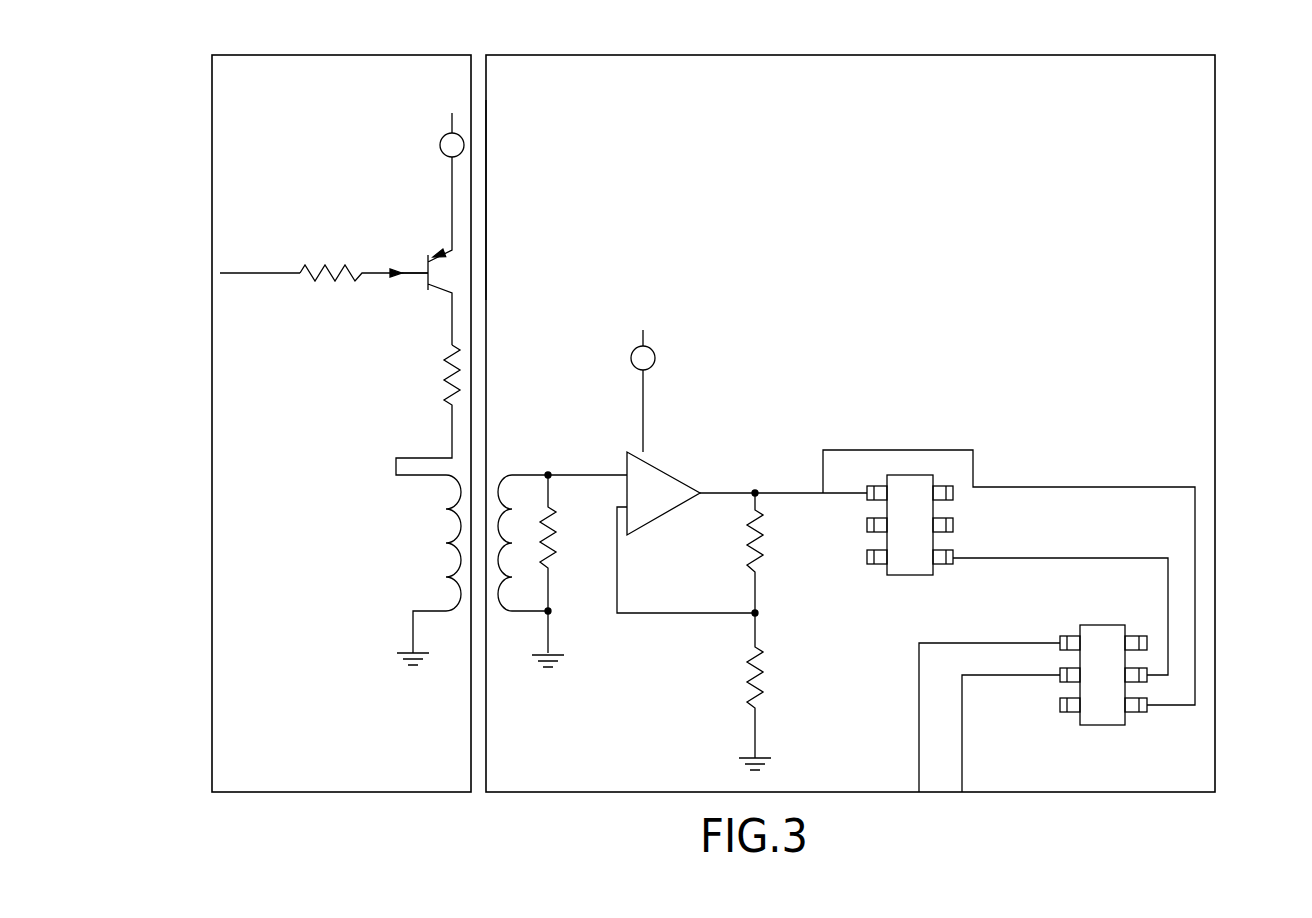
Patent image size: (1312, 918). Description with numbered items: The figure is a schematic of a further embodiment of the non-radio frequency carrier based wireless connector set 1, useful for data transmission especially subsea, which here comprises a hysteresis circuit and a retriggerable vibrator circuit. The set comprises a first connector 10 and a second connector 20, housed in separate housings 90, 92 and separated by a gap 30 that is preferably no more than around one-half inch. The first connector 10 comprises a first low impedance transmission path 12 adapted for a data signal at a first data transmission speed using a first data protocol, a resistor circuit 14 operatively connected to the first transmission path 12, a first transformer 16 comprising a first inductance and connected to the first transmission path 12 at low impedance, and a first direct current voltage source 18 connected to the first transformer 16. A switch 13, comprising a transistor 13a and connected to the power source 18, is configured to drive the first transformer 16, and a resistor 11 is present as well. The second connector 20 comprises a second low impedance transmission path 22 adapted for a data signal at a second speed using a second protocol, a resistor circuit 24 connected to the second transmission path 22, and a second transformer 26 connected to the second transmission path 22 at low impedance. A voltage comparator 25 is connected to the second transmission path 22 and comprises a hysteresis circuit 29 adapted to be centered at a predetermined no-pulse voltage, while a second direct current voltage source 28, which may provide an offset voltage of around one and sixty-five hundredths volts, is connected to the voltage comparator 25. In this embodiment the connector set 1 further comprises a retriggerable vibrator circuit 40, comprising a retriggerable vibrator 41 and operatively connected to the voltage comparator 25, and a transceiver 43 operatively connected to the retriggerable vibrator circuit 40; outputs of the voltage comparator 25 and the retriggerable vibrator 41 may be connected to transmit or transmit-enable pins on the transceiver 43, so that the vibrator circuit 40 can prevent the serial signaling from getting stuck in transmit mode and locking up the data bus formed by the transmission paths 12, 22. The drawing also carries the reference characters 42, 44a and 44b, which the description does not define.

The non-radio frequency carrier based wireless connector set 1 is at (170, 415).
The first connector 10 is at (185, 598).
The resistor 11 is at (315, 280).
The first low impedance transmission path 12 is at (258, 272).
The switch 13 is at (418, 253).
The transistor 13a is at (427, 283).
The resistor circuit 14 is at (445, 383).
The first transformer 16 is at (446, 545).
The first direct current voltage source 18 is at (440, 146).
The second connector 20 is at (1232, 459).
The second low impedance transmission path 22 is at (780, 493).
The resistor circuit 24 is at (550, 570).
The voltage comparator 25 is at (662, 470).
The second transformer 26 is at (521, 600).
The second direct current voltage source 28 is at (631, 358).
The hysteresis circuit 29 is at (682, 550).
The gap 30 is at (487, 190).
The retriggerable vibrator circuit 40 is at (1018, 487).
The retriggerable vibrator 41 is at (908, 533).
The connection line 42 is at (1093, 558).
The transceiver 43 is at (1090, 640).
The output line 44a is at (918, 722).
The output line 44b is at (962, 735).
The housing 90 is at (212, 192).
The housing 92 is at (1215, 190).